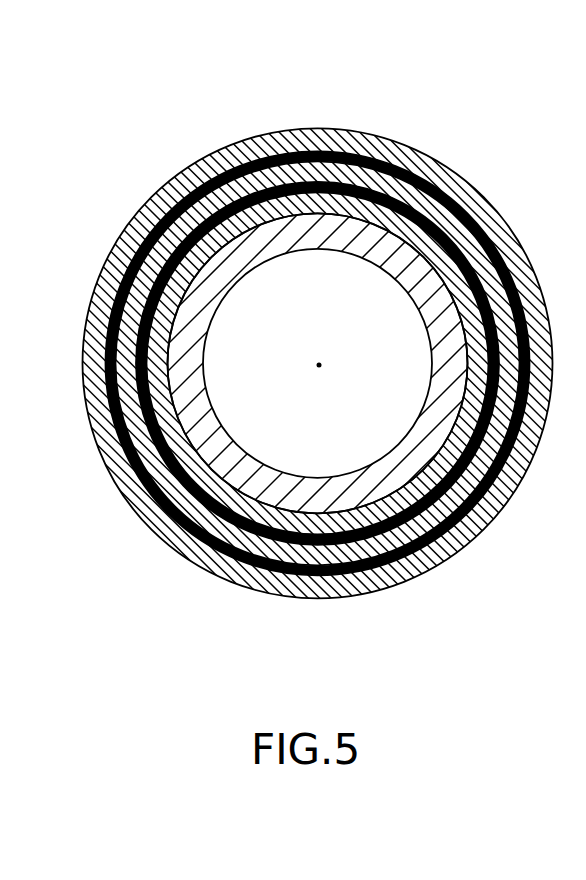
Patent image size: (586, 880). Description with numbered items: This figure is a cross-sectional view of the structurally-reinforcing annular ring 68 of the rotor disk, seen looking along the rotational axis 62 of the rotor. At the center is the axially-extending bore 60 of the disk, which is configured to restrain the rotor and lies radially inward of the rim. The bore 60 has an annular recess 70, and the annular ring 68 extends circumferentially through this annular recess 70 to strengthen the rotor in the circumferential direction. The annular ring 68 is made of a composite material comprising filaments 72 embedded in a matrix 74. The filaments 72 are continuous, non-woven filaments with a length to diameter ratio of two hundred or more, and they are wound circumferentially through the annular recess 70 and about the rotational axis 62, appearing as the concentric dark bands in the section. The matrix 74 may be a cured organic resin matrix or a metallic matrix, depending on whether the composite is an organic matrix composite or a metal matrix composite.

The annular ring 68 is at (455, 112).
The filaments 72 is at (297, 158).
The matrix 74 is at (362, 182).
The annular recess 70 is at (420, 238).
The bore 60 is at (425, 274).
The rotational axis 62 is at (319, 365).